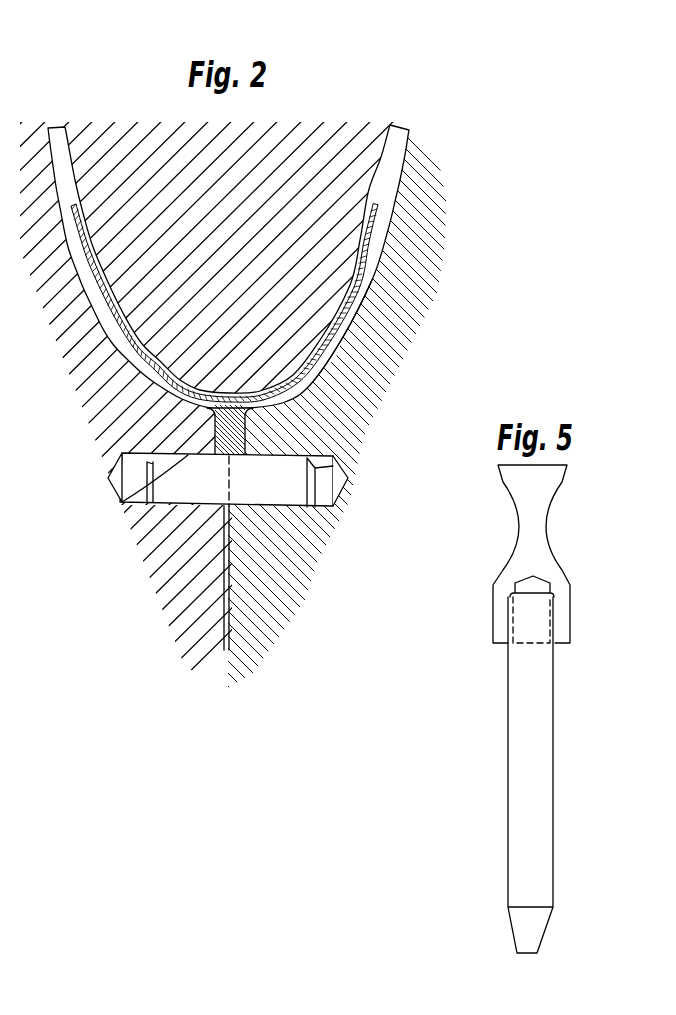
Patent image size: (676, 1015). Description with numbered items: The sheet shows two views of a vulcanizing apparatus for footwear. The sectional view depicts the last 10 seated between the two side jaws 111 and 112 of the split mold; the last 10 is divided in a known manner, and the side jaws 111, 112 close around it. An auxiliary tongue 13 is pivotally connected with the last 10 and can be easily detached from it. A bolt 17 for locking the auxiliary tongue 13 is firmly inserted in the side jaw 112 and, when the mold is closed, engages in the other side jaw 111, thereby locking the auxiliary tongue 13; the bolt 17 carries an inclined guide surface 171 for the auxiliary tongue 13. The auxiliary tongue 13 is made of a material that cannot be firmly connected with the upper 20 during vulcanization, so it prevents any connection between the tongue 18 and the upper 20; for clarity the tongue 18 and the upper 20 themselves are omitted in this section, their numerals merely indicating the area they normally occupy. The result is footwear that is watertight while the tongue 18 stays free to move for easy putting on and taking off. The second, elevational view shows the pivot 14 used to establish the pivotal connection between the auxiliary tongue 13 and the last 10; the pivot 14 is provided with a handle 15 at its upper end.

In FIG. 2, the last 10 is at (363, 193).
In FIG. 2, the tongue 18 is at (337, 290).
In FIG. 2, the upper 20 is at (333, 344).
In FIG. 2, the auxiliary tongue 13 is at (243, 434).
In FIG. 2, the bolt 17 is at (293, 497).
In FIG. 2, the inclined guide surface 171 is at (122, 502).
In FIG. 2, the side jaw 111 is at (168, 550).
In FIG. 2, the side jaw 112 is at (290, 577).
In FIG. 5, the pivot 14 is at (515, 792).
In FIG. 5, the handle 15 is at (541, 511).